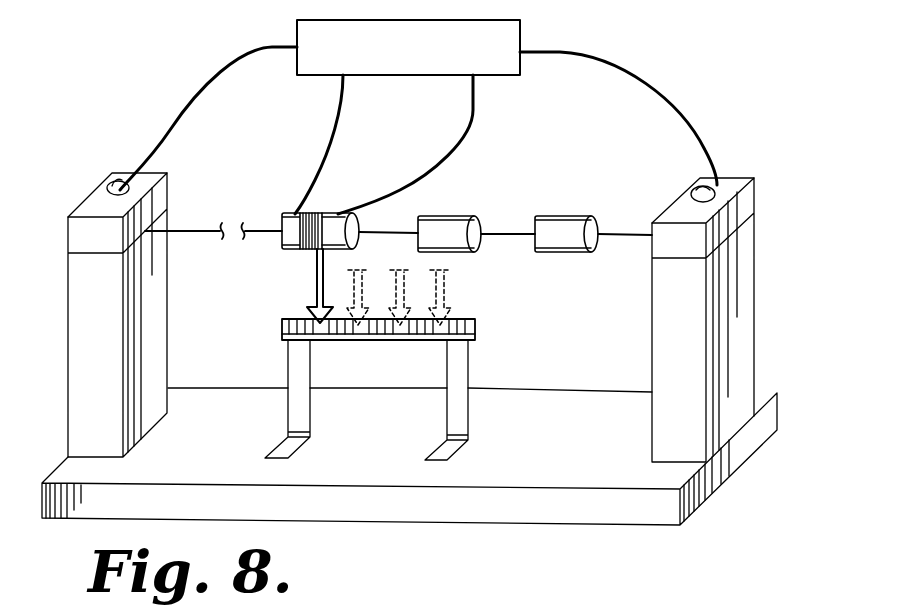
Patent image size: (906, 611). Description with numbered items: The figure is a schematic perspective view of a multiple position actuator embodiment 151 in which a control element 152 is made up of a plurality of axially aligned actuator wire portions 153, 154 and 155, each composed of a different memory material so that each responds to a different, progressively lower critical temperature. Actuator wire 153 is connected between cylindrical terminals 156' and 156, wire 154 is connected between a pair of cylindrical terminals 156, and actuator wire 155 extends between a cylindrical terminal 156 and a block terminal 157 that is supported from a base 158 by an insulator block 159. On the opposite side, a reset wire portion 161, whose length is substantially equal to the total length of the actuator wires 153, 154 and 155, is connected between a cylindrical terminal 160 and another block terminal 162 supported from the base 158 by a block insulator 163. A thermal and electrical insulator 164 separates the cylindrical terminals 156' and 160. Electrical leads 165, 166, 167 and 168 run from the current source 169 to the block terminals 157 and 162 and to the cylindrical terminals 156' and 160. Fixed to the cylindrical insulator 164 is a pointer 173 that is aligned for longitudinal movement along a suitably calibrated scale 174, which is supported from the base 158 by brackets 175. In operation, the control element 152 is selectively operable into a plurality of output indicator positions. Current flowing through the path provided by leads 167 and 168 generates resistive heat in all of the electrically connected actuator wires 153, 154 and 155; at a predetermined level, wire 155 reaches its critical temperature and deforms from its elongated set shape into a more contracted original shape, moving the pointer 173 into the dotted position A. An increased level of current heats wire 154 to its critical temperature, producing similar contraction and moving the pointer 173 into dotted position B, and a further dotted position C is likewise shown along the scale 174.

The actuator embodiment 151 is at (146, 84).
The control element 152 is at (513, 298).
The actuator wire 153 is at (396, 228).
The actuator wire 154 is at (522, 232).
The actuator wire 155 is at (620, 234).
The cylindrical terminals 156 is at (529, 226).
The cylindrical terminal 156' is at (399, 202).
The block terminal 157 is at (756, 205).
The base 158 is at (778, 394).
The insulator block 159 is at (756, 312).
The cylindrical terminal 160 is at (292, 213).
The reset wire portion 161 is at (246, 212).
The block terminal 162 is at (80, 207).
The block insulator 163 is at (68, 348).
The thermal and electrical insulator 164 is at (313, 213).
The electrical lead 165 is at (233, 62).
The electrical lead 166 is at (338, 112).
The electrical lead 167 is at (463, 132).
The electrical lead 168 is at (650, 80).
The current source 169 is at (522, 38).
The pointer 173 is at (316, 270).
The scale 174 is at (330, 341).
The brackets 175 is at (288, 362).
The position A is at (362, 296).
The position B is at (405, 298).
The position C is at (445, 298).